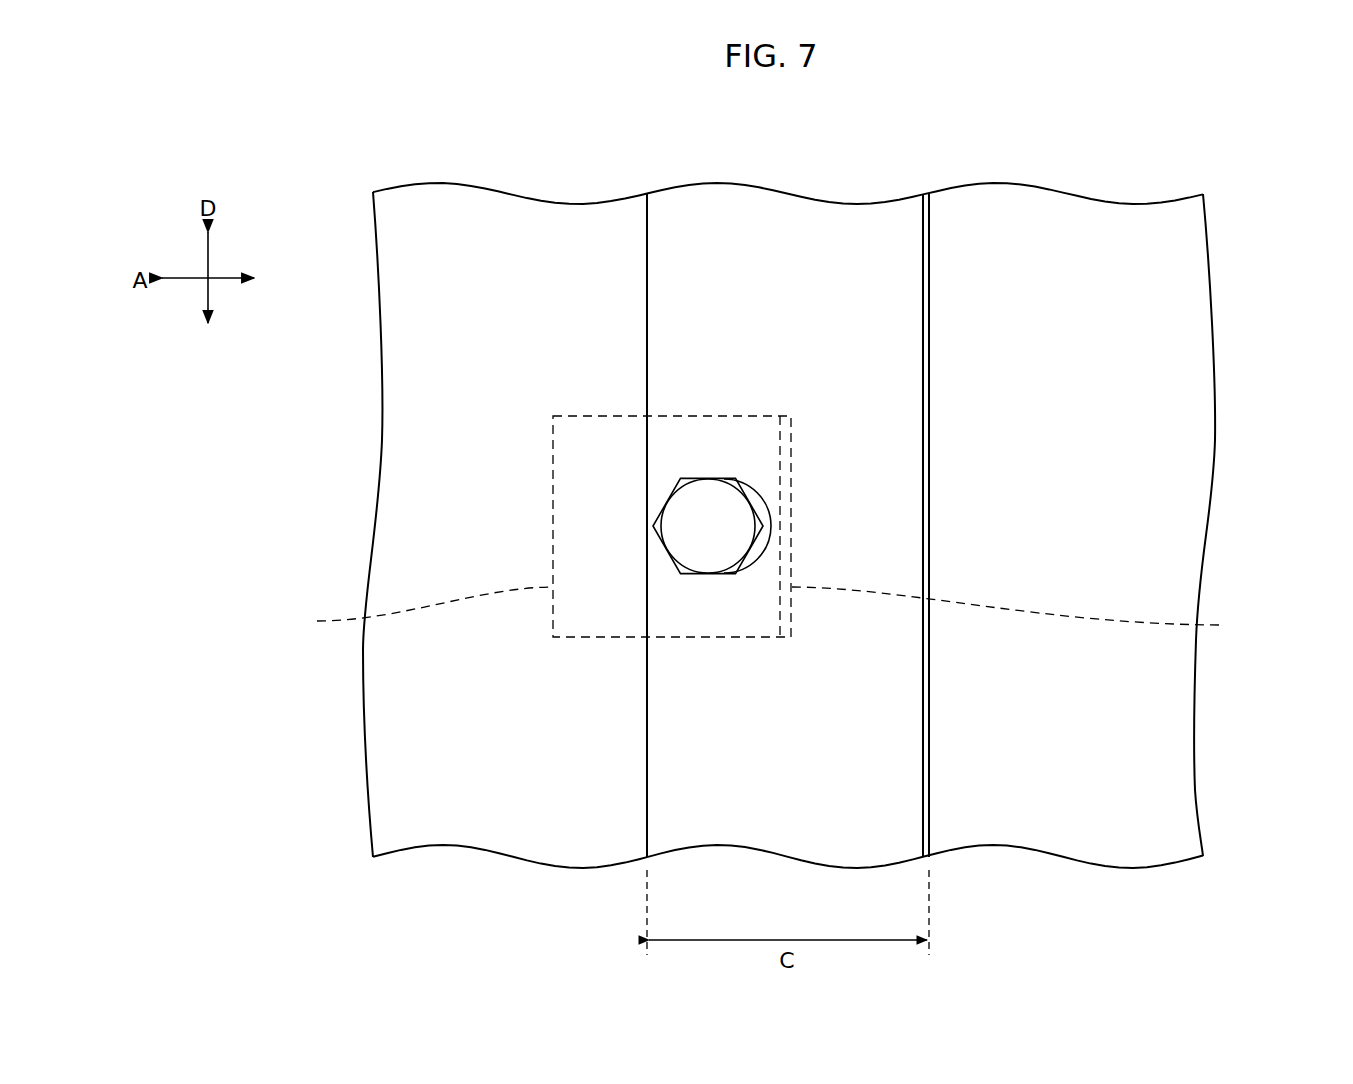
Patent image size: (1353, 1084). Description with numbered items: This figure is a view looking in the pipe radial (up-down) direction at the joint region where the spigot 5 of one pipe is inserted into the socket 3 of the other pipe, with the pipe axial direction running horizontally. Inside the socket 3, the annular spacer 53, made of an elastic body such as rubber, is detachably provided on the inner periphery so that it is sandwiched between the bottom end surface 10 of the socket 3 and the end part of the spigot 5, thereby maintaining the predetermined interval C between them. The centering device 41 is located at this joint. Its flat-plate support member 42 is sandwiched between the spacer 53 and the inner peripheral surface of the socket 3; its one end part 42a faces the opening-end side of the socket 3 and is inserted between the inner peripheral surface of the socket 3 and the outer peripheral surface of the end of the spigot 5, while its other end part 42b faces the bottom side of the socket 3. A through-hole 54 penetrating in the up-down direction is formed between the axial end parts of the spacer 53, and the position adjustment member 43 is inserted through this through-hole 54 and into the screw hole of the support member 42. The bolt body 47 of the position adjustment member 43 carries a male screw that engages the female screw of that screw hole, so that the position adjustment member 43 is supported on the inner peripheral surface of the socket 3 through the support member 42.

The socket 3 is at (1093, 847).
The spigot 5 is at (505, 813).
The bottom end surface 10 is at (925, 813).
The centering device 41 is at (709, 447).
The support member 42 is at (599, 416).
The one end part 42a is at (412, 611).
The other end part 42b is at (1034, 611).
The position adjustment member 43 is at (726, 474).
The bolt body 47 is at (708, 553).
The spacer 53 is at (792, 818).
The through-hole 54 is at (747, 490).